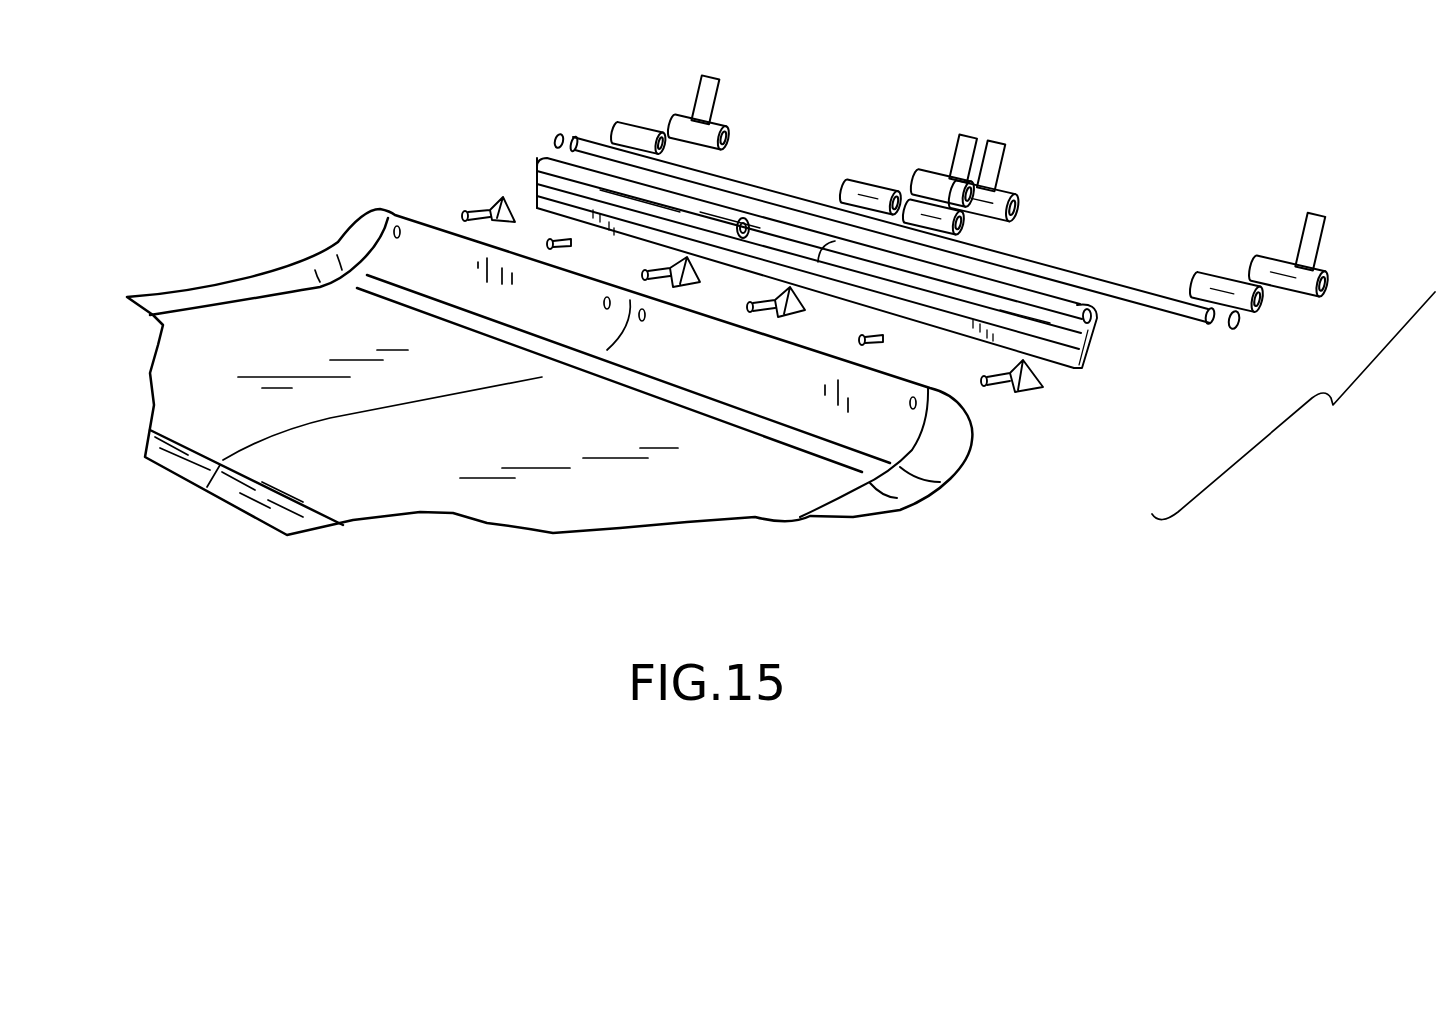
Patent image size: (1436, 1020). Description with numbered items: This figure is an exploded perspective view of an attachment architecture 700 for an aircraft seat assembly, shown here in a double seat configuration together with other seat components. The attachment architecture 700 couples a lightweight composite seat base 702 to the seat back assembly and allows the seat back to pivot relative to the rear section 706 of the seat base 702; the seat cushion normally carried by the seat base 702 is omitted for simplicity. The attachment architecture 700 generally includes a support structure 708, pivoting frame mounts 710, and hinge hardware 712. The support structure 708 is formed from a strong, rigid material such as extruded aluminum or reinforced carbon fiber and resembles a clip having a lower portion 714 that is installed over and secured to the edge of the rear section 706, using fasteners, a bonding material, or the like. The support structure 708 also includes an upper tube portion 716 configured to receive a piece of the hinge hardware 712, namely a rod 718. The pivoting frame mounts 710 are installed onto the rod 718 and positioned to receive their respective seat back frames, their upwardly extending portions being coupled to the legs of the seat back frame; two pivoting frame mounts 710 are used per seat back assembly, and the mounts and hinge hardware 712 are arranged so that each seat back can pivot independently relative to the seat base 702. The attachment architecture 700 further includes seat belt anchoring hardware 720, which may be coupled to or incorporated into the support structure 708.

The attachment architecture 700 is at (1293, 406).
The seat base 702 is at (195, 287).
The rear section 706 is at (968, 437).
The support structure 708 is at (533, 177).
The pivoting frame mount 710 is at (690, 102).
The hinge hardware 712 is at (1170, 338).
The lower portion 714 is at (1062, 366).
The upper tube portion 716 is at (1089, 312).
The rod 718 is at (1082, 267).
The anchoring hardware 720 is at (487, 207).